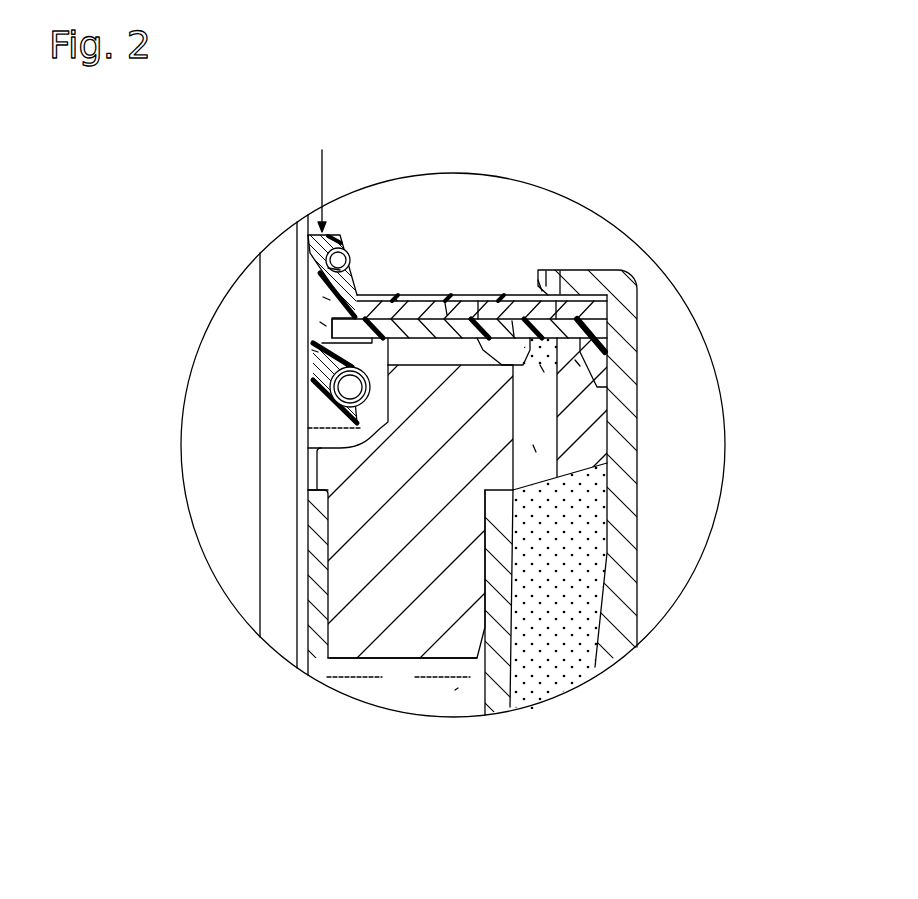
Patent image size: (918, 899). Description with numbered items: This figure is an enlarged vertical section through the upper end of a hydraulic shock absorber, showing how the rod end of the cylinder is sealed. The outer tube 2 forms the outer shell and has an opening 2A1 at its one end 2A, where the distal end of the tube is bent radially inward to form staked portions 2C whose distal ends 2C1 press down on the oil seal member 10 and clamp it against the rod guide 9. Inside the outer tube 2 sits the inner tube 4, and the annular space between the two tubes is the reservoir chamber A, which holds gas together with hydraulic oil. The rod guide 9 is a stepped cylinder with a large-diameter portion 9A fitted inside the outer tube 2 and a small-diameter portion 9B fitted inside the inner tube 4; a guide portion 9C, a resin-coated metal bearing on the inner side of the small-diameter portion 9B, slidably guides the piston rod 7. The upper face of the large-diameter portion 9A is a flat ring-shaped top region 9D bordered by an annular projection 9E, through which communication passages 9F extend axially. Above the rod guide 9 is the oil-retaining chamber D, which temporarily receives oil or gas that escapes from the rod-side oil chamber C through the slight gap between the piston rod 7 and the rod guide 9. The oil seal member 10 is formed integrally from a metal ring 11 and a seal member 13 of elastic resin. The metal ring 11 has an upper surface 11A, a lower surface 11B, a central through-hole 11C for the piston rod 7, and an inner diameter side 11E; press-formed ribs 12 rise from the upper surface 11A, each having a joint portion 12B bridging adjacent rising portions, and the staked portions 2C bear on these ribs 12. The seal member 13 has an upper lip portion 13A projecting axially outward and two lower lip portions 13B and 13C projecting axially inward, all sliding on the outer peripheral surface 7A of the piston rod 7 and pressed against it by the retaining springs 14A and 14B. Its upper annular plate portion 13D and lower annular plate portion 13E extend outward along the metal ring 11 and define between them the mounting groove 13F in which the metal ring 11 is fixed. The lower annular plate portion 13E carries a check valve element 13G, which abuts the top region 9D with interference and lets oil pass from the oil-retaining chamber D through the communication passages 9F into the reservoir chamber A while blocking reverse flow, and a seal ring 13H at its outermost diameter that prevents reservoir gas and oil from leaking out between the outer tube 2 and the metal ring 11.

The outer tube 2 is at (622, 522).
The one end 2A is at (590, 308).
The opening 2A1 is at (538, 288).
The staked portions 2C is at (583, 287).
The distal ends 2C1 is at (547, 288).
The inner tube 4 is at (500, 640).
The piston rod 7 is at (243, 481).
The outer peripheral surface 7A is at (318, 455).
The rod guide 9 is at (393, 537).
The large-diameter portion 9A is at (582, 418).
The small-diameter portion 9B is at (403, 622).
The guide portion 9C is at (315, 578).
The top region 9D is at (540, 365).
The annular projection 9E is at (575, 360).
The communication passages 9F is at (533, 445).
The oil seal member 10 is at (324, 181).
The metal ring 11 is at (560, 296).
The upper surface 11A is at (323, 297).
The lower surface 11B is at (312, 350).
The through-hole 11C is at (320, 322).
The inner diameter side 11E is at (330, 268).
The ribs 12 is at (427, 293).
The joint portions 12B is at (480, 313).
The seal member 13 is at (357, 293).
The upper lip portion 13A is at (352, 292).
The lower lip portion 13B is at (357, 350).
The lower lip portion 13C is at (318, 410).
The upper annular plate portion 13D is at (446, 300).
The lower annular plate portion 13E is at (512, 330).
The mounting groove 13F is at (396, 297).
The check valve element 13G is at (572, 346).
The seal ring 13H is at (600, 334).
The retaining spring 14A is at (343, 247).
The retaining spring 14B is at (330, 383).
The reservoir chamber A is at (560, 637).
The rod-side oil chamber C is at (455, 690).
The oil-retaining chamber D is at (360, 430).